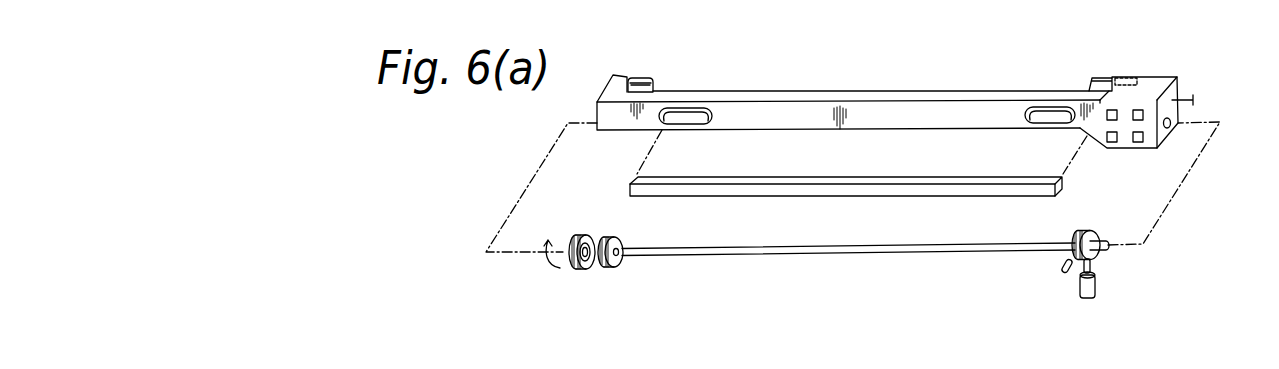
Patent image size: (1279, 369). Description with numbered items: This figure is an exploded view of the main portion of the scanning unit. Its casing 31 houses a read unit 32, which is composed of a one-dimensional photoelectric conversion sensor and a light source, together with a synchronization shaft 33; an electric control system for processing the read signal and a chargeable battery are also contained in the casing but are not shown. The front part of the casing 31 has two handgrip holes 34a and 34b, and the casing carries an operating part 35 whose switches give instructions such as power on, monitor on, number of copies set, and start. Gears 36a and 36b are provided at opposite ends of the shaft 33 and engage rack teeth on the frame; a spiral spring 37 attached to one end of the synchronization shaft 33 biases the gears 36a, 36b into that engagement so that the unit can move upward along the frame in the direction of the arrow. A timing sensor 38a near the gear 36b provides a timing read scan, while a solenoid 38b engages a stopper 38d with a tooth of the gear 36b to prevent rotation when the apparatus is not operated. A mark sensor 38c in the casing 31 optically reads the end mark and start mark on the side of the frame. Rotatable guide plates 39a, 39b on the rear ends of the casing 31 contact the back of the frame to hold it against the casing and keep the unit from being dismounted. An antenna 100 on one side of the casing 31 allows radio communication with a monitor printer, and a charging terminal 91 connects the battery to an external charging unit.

The casing 31 is at (938, 90).
The read unit 32 is at (832, 175).
The synchronization shaft 33 is at (855, 255).
The handgrip hole 34a is at (693, 117).
The handgrip hole 34b is at (1050, 113).
The operating part 35 is at (1127, 108).
The gear 36a is at (612, 270).
The gear 36b is at (1093, 229).
The spiral spring 37 is at (578, 268).
The timing sensor 38a is at (1063, 269).
The solenoid 38b is at (1098, 280).
The mark sensor 38c is at (1133, 75).
The stopper 38d is at (1097, 265).
The guide plate 39a is at (652, 77).
The guide plate 39b is at (1096, 78).
The charging terminal 91 is at (1177, 123).
The antenna 100 is at (1192, 90).